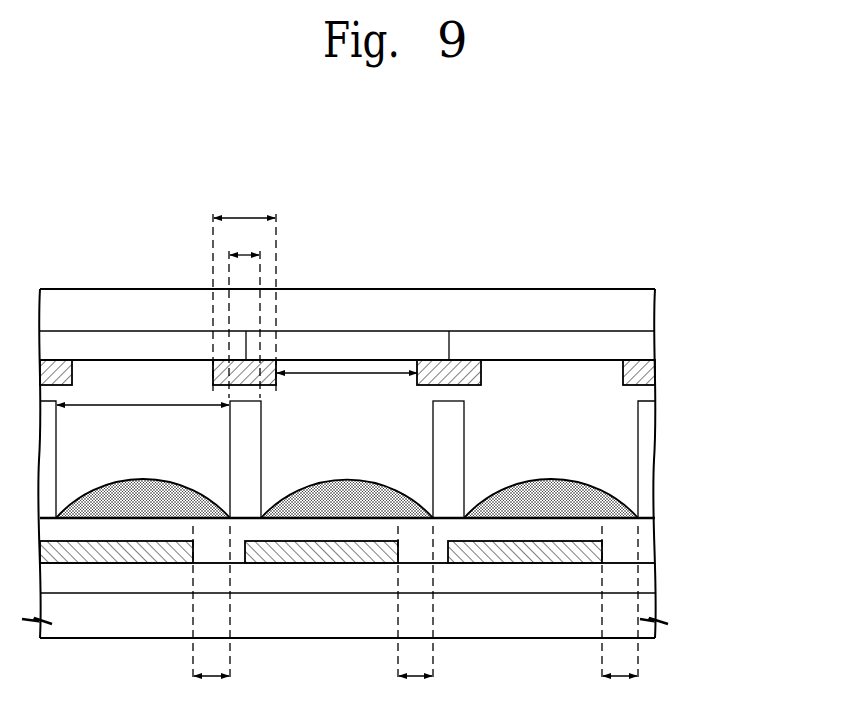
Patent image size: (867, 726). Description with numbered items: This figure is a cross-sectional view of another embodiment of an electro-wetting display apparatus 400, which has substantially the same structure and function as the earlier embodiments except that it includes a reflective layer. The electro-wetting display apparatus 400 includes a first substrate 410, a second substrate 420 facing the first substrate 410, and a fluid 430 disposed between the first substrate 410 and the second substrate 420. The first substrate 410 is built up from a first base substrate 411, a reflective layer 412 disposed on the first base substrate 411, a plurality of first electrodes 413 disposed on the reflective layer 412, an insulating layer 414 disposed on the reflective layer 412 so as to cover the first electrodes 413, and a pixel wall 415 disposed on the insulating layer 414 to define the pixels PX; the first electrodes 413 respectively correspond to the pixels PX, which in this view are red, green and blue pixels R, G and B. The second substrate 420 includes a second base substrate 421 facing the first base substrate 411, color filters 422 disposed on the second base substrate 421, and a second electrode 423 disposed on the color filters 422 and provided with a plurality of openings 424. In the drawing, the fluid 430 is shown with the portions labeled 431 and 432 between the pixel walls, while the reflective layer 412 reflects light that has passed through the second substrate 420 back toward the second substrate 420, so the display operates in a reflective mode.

The electro-wetting display apparatus 400 is at (100, 220).
The first substrate 410 is at (738, 623).
The first base substrate 411 is at (645, 607).
The reflective layer 412 is at (648, 578).
The first electrodes 413 is at (594, 548).
The insulating layer 414 is at (647, 530).
The pixel wall 415 is at (645, 497).
The second substrate 420 is at (738, 302).
The second base substrate 421 is at (640, 312).
The color filters 422 is at (640, 347).
The second electrode 423 is at (653, 370).
The openings 424 is at (347, 388).
The fluid 430 is at (738, 422).
The partition wall 431 is at (620, 432).
The light emitting layer 432 is at (593, 483).